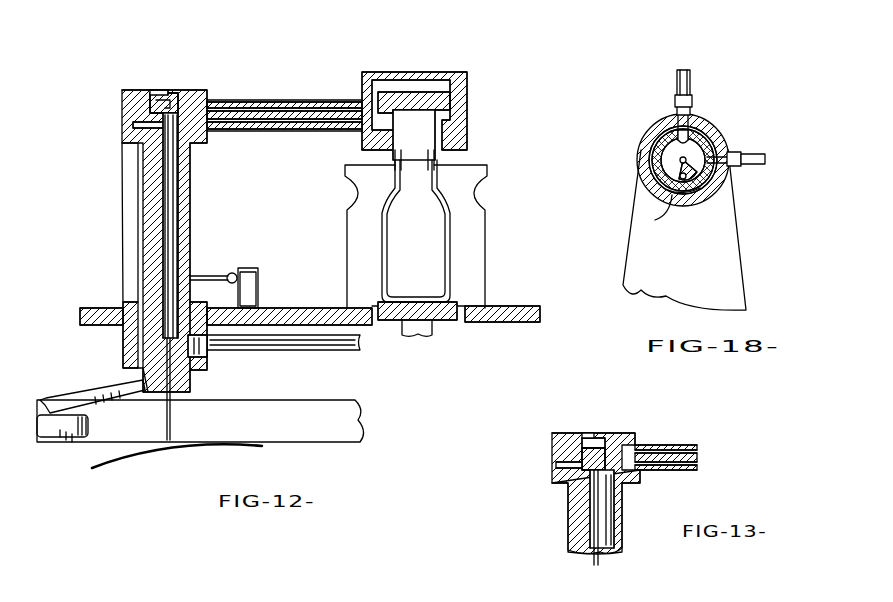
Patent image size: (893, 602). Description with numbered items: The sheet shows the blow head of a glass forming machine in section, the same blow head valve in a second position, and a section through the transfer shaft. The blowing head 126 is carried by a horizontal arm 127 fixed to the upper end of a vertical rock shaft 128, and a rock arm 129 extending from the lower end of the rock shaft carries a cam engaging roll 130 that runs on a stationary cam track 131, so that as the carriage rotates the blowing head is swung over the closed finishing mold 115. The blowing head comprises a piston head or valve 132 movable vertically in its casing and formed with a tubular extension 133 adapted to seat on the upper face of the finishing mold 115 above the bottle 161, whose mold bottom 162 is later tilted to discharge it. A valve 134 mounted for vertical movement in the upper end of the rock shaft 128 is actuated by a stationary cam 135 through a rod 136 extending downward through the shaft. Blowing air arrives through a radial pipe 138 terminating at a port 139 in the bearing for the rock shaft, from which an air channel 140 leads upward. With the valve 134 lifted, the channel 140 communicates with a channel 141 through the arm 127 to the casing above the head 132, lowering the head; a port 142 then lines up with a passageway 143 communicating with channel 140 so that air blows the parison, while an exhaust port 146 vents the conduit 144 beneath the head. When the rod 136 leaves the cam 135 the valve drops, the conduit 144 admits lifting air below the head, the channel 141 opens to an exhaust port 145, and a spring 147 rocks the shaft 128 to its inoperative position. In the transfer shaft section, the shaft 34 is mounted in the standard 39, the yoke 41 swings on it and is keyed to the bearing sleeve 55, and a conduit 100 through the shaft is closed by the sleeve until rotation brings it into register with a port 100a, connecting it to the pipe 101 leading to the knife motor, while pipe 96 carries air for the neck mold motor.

In FIG. 12, the rock shaft 128 is at (191, 187).
In FIG. 13, the rock shaft 128 is at (568, 521).
In FIG. 12, the exhaust port 145 is at (165, 93).
In FIG. 13, the exhaust port 145 is at (592, 438).
In FIG. 12, the valve 134 is at (157, 90).
In FIG. 13, the valve 134 is at (582, 450).
In FIG. 12, the exhaust port 146 is at (122, 138).
In FIG. 13, the exhaust port 146 is at (556, 478).
In FIG. 12, the air channel 140 is at (180, 247).
In FIG. 13, the air channel 140 is at (612, 510).
In FIG. 12, the channel 141 is at (231, 102).
In FIG. 13, the channel 141 is at (668, 445).
In FIG. 12, the passageway 143 is at (299, 119).
In FIG. 12, the horizontal arm 127 is at (325, 100).
In FIG. 12, the conduit 144 is at (260, 131).
In FIG. 13, the conduit 144 is at (660, 470).
In FIG. 12, the blowing head 126 is at (467, 100).
In FIG. 12, the piston head or valve 132 is at (432, 92).
In FIG. 12, the port 142 is at (414, 135).
In FIG. 12, the tubular extension 133 is at (436, 160).
In FIG. 12, the finishing mold 115 is at (486, 199).
In FIG. 12, the bottle 161 is at (450, 245).
In FIG. 12, the mold bottom 162 is at (445, 320).
In FIG. 12, the spring 147 is at (236, 268).
In FIG. 12, the port 139 is at (207, 355).
In FIG. 12, the radial pipe 138 is at (282, 350).
In FIG. 12, the rock arm 129 is at (100, 392).
In FIG. 12, the cam engaging roll 130 is at (60, 438).
In FIG. 12, the cam track 131 is at (340, 400).
In FIG. 12, the rod 136 is at (171, 419).
In FIG. 13, the rod 136 is at (593, 560).
In FIG. 12, the cam 135 is at (114, 452).
In FIG. 18, the standard 39 is at (737, 233).
In FIG. 18, the conduit 100 is at (722, 126).
In FIG. 18, the shaft 34 is at (652, 182).
In FIG. 18, the bearing sleeve 55 is at (657, 143).
In FIG. 18, the port 100a is at (705, 184).
In FIG. 18, the pipe 96 is at (688, 76).
In FIG. 18, the pipe 101 is at (752, 152).
In FIG. 18, the yoke 41 is at (658, 218).